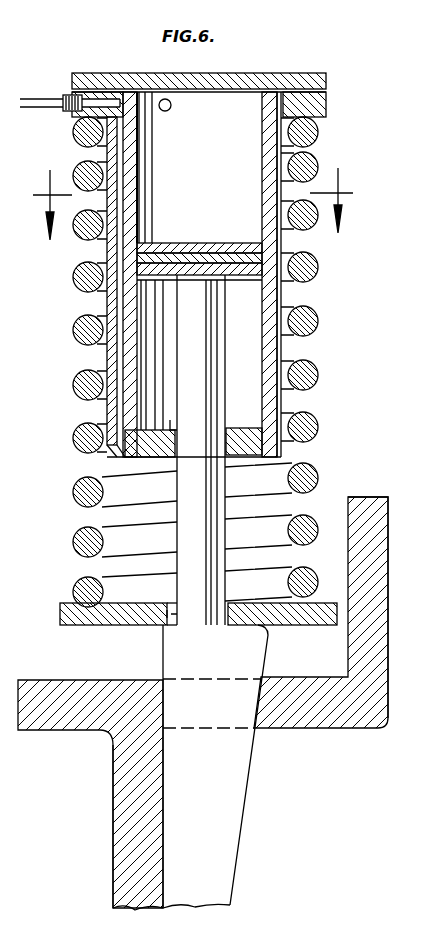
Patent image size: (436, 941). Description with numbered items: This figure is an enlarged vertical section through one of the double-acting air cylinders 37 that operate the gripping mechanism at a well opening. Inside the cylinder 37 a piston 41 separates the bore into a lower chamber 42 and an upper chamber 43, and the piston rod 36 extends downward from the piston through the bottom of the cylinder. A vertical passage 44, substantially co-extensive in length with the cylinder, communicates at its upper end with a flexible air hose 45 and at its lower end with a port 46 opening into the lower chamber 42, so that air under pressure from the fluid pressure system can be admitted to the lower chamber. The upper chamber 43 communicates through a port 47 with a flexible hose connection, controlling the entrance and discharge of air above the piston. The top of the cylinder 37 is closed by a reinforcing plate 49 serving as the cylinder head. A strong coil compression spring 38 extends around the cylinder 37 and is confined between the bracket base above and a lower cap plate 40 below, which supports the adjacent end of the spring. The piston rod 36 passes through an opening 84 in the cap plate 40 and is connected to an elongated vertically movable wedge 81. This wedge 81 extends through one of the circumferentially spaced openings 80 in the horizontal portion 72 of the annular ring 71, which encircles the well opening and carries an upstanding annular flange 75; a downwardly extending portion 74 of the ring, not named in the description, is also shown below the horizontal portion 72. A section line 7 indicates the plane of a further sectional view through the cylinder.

The section line 7— 7 is at (191, 205).
The piston rod 36 is at (215, 365).
The double-acting air cylinder 37 is at (107, 360).
The coil compression spring 38 is at (316, 132).
The cap plate 40 is at (72, 625).
The piston 41 is at (215, 243).
The lower chamber 42 is at (250, 305).
The upper chamber 43 is at (150, 146).
The vertical passage 44 is at (120, 306).
The flexible air hose 45 is at (46, 99).
The port 46 is at (132, 416).
The port 47 is at (170, 100).
The reinforcing plate 49 is at (292, 73).
The annular ring 71 is at (388, 667).
The horizontal portion 72 is at (85, 730).
The column 74 is at (113, 877).
The upstanding annular flange 75 is at (382, 592).
The opening 80 is at (265, 718).
The elongated wedge 81 is at (206, 833).
The opening 84 is at (165, 617).